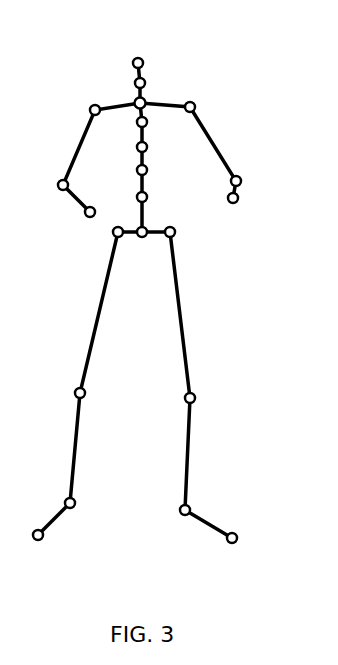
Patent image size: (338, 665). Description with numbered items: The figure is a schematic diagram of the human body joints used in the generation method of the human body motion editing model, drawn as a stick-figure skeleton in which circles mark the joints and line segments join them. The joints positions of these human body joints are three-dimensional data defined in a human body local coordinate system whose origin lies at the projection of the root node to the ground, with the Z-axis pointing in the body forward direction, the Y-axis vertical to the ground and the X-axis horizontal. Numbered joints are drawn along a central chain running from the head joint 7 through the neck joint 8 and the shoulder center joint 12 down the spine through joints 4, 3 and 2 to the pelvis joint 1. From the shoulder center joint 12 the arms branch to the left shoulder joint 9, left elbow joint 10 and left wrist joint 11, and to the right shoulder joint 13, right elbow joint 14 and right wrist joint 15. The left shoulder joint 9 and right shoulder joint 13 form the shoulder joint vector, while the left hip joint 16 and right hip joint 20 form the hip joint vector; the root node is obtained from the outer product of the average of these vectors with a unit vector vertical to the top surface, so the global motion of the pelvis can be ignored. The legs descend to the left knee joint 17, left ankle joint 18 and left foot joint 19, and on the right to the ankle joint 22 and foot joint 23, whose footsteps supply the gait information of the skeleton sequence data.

The pelvis joint 1 is at (147, 247).
The lower spine joint 2 is at (156, 189).
The middle spine joint 3 is at (156, 164).
The upper spine joint 4 is at (156, 139).
The head joint 7 is at (140, 47).
The neck joint 8 is at (127, 89).
The left shoulder joint 9 is at (98, 96).
The left elbow joint 10 is at (52, 171).
The left wrist joint 11 is at (82, 225).
The shoulder center joint 12 is at (159, 92).
The right shoulder joint 13 is at (193, 93).
The right elbow joint 14 is at (252, 170).
The right wrist joint 15 is at (245, 210).
The left hip joint 16 is at (117, 217).
The left knee joint 17 is at (62, 389).
The left ankle joint 18 is at (51, 494).
The left foot joint 19 is at (38, 554).
The right hip joint 20 is at (190, 220).
The right ankle joint 22 is at (204, 501).
The right foot joint 23 is at (250, 545).